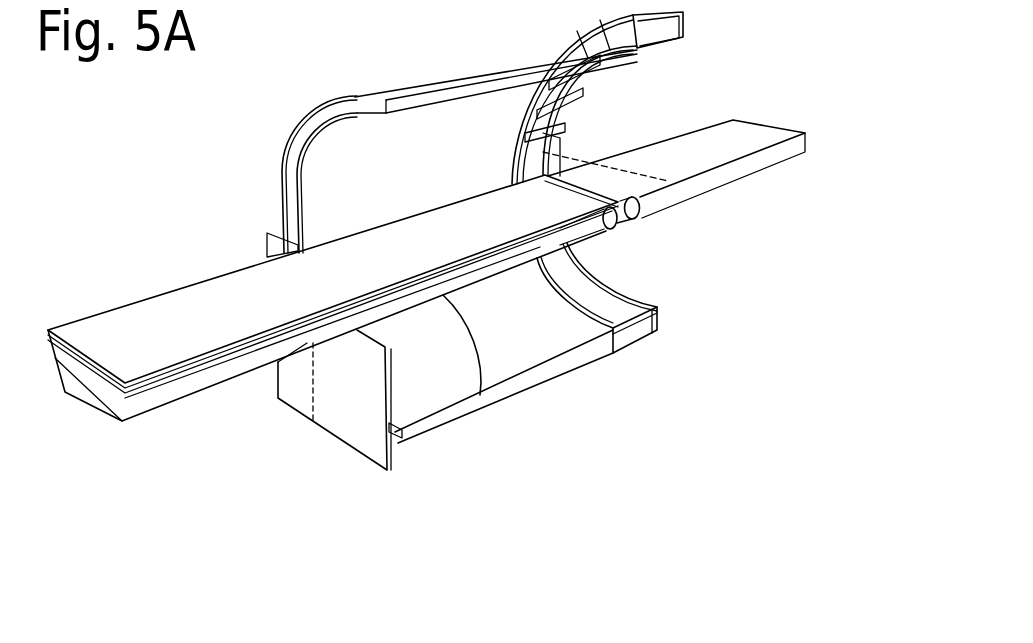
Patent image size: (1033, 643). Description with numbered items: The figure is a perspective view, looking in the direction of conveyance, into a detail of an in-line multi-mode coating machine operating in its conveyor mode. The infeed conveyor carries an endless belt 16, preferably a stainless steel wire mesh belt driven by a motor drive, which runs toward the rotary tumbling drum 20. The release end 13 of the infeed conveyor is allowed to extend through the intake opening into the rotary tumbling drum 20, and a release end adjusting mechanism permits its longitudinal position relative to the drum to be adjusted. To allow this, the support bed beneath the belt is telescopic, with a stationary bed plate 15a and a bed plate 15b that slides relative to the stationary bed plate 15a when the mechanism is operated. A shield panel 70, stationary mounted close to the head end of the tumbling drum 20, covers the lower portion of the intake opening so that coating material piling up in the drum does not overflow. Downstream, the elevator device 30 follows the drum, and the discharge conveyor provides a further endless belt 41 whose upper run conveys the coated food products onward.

The release end 13 is at (616, 226).
The stationary bed plate 15a is at (223, 375).
The sliding bed plate 15b is at (480, 393).
The endless belt 16 is at (148, 317).
The rotary tumbling drum 20 is at (532, 396).
The elevator device 30 is at (657, 351).
The endless belt 41 is at (667, 153).
The shield panel 70 is at (368, 414).